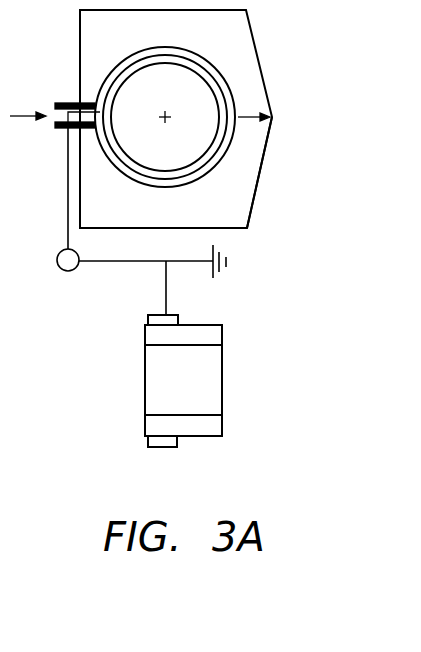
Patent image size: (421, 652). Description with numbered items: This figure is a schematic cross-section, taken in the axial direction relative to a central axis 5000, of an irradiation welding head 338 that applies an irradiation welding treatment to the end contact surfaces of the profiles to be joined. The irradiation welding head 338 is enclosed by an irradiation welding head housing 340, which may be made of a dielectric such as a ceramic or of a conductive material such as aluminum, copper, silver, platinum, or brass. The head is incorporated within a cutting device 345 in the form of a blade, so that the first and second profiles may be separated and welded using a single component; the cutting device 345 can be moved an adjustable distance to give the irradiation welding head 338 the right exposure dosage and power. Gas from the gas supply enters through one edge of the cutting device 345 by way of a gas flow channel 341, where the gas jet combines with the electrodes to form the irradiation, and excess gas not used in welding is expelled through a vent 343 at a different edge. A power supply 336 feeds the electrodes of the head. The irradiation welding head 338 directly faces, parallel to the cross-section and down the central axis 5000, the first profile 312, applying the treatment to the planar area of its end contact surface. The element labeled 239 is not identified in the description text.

The irradiation welding head housing 340 is at (240, 175).
The cutting device 345 is at (237, 203).
The irradiation welding head 338 is at (225, 80).
The vent 343 is at (237, 112).
The central axis 5000 is at (161, 113).
The gas flow channel 341 is at (78, 103).
The power supply 336 is at (64, 271).
The first profile 312 is at (190, 427).
The motor base 239 is at (150, 443).